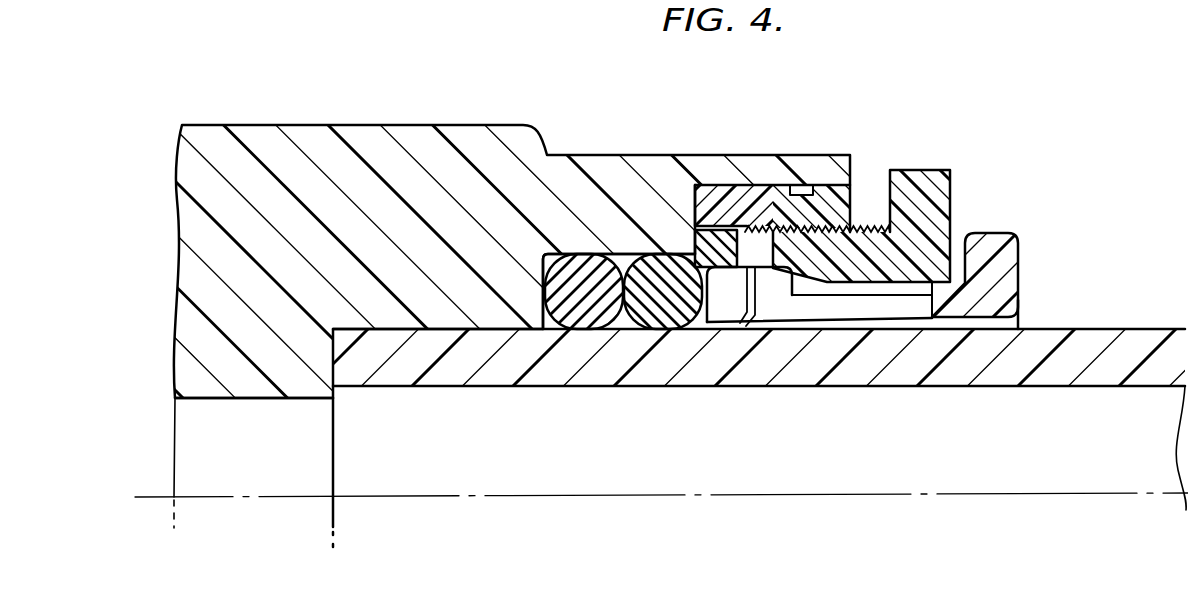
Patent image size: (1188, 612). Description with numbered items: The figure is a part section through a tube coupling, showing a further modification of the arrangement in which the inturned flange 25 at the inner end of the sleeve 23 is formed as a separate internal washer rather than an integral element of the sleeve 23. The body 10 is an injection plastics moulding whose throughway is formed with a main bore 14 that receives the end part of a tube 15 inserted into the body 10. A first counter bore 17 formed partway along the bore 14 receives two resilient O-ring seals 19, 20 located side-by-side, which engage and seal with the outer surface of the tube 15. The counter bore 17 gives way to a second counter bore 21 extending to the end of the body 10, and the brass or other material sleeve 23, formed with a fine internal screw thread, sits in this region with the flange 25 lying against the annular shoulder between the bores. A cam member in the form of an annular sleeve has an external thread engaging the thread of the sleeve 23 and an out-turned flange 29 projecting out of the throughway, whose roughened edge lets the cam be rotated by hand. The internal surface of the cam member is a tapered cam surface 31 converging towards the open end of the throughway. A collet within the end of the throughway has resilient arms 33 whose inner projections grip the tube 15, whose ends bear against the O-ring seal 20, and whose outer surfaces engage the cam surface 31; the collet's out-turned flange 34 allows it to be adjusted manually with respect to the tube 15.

The body 10 is at (257, 135).
The main bore 14 is at (257, 400).
The tube 15 is at (1142, 329).
The first counter bore 17 is at (628, 250).
The O-ring seal 19 is at (583, 307).
The O-ring seal 20 is at (663, 310).
The second counter bore 21 is at (783, 170).
The sleeve 23 is at (768, 200).
The radially inwardly extending flange 25 is at (698, 243).
The out-turned flange 29 is at (933, 197).
The tapered cam surface 31 is at (807, 268).
The resilient arms 33 is at (905, 306).
The out-turned flange 34 is at (1003, 258).